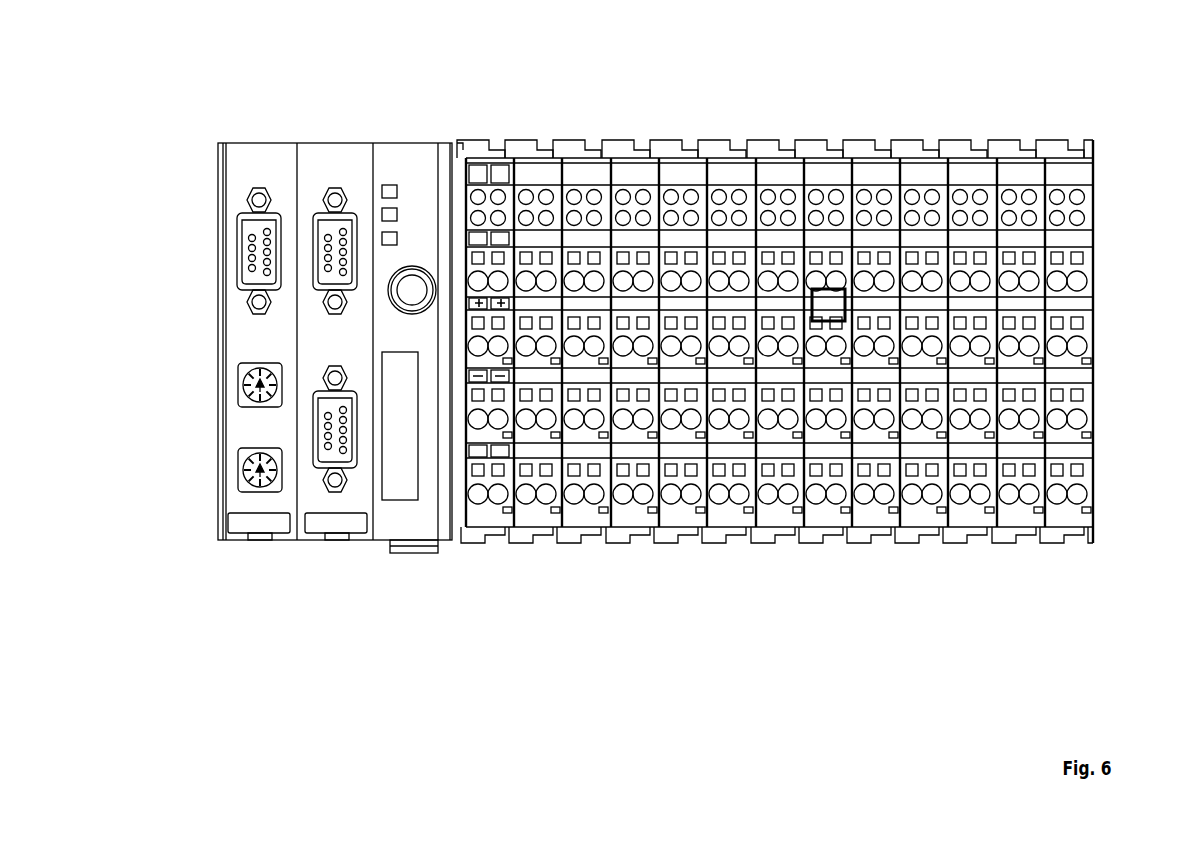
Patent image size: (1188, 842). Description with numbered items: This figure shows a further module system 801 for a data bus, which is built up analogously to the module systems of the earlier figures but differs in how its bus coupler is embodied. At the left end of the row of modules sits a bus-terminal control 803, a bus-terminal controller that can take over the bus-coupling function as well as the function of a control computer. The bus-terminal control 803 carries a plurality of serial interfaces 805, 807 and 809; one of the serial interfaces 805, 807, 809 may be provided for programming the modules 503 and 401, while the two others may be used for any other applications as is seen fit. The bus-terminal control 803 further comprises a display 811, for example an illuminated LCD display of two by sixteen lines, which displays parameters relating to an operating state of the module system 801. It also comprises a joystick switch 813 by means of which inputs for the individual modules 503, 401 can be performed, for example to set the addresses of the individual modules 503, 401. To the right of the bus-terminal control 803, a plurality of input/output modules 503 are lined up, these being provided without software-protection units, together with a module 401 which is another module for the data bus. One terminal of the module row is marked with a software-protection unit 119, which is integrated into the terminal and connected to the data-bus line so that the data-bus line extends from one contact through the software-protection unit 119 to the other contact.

The module system 801 is at (1080, 109).
The bus-terminal control 803 is at (216, 127).
The serial interface 805 is at (333, 453).
The serial interface 807 is at (330, 222).
The serial interface 809 is at (247, 258).
The display 811 is at (402, 490).
The joystick switch 813 is at (402, 295).
The input/output module 503 is at (732, 523).
The module 401 is at (827, 522).
The software-protection unit 119 is at (830, 305).